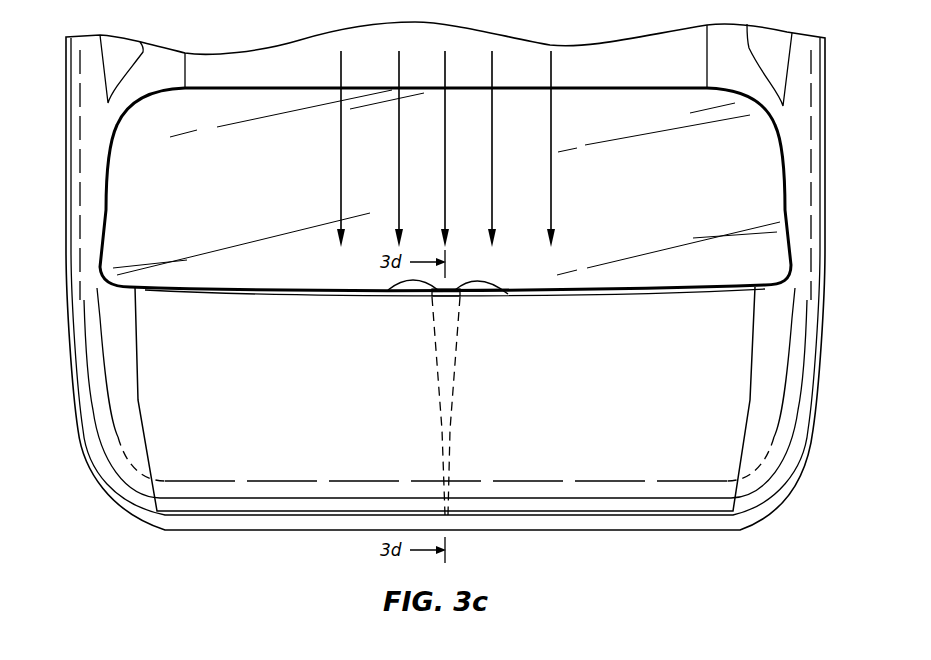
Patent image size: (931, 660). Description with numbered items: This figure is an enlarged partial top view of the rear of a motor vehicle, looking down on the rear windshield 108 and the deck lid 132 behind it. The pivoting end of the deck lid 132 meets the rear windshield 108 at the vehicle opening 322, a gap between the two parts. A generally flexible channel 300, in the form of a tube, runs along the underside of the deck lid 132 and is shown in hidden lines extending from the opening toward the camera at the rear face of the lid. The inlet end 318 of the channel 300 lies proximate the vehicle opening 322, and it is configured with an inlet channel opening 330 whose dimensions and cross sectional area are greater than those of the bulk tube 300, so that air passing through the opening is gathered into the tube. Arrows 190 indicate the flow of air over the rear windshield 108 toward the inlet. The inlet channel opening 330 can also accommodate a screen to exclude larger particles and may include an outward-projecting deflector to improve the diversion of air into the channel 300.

The rear windshield 108 is at (740, 185).
The deck lid 132 is at (722, 387).
The incident light rays 190 is at (551, 178).
The channel 300 is at (457, 435).
The inlet end 318 is at (500, 287).
The vehicle opening 322 is at (118, 284).
The inlet channel opening 330 is at (400, 287).